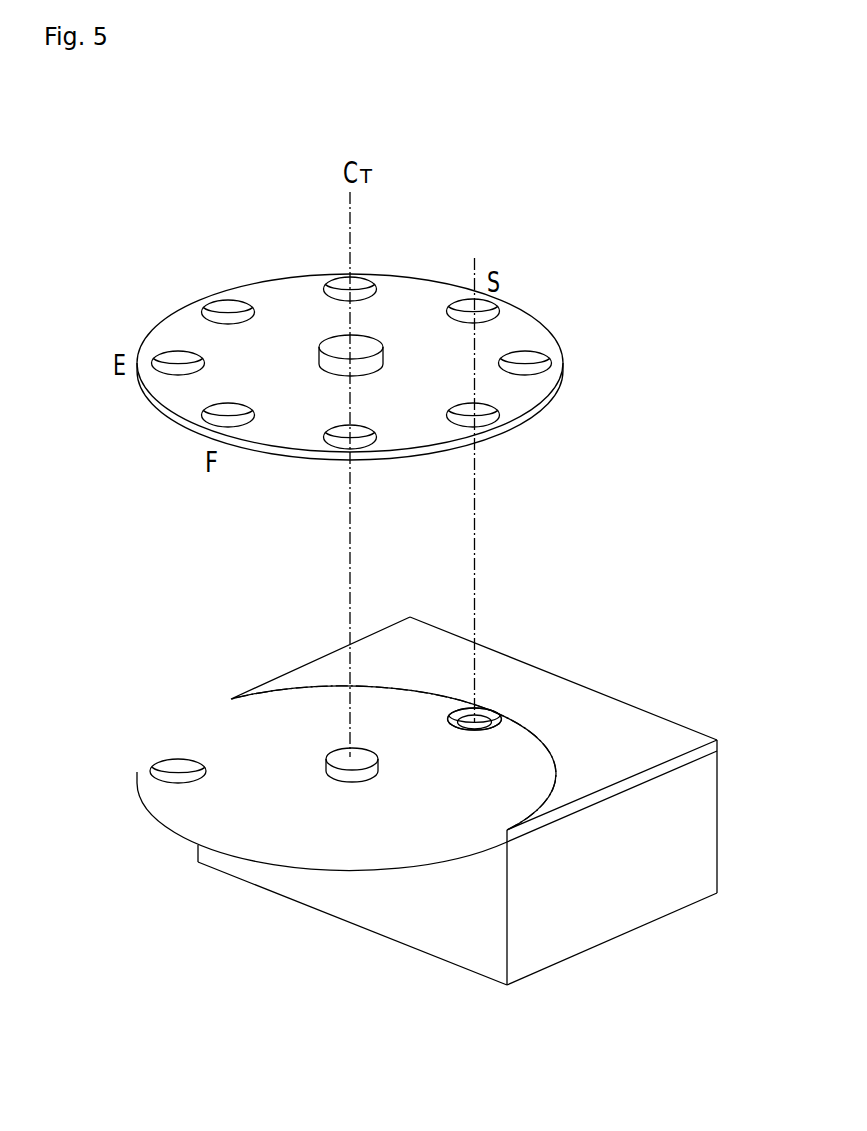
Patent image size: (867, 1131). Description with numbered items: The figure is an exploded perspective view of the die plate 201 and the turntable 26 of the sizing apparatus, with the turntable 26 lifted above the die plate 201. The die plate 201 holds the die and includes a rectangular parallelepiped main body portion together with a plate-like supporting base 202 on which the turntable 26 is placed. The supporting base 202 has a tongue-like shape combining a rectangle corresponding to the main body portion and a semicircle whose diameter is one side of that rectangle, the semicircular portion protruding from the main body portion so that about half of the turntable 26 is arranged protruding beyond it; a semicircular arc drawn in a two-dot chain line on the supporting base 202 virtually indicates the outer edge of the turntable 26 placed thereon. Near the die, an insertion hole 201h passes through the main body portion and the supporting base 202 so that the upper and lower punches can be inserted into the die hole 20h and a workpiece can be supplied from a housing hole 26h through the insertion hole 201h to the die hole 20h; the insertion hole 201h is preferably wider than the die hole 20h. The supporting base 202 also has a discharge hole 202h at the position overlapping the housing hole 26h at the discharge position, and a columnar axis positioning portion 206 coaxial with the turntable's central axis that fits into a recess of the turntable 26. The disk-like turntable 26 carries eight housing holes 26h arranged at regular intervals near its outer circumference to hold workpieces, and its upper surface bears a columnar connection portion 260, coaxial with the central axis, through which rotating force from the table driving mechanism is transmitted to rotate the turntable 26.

The turntable 26 is at (184, 302).
The housing holes 26h is at (173, 360).
The connection portion 260 is at (367, 347).
The die plate 201 is at (421, 773).
The supporting base 202 is at (578, 703).
The axis positioning portion 206 is at (338, 758).
The die hole 20h is at (466, 722).
The insertion hole 201h is at (488, 712).
The discharge hole 202h is at (180, 772).